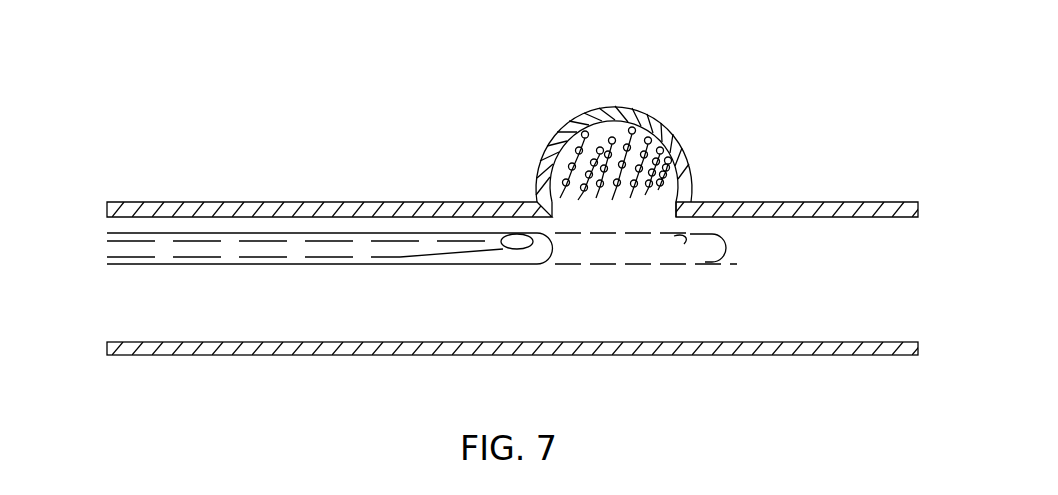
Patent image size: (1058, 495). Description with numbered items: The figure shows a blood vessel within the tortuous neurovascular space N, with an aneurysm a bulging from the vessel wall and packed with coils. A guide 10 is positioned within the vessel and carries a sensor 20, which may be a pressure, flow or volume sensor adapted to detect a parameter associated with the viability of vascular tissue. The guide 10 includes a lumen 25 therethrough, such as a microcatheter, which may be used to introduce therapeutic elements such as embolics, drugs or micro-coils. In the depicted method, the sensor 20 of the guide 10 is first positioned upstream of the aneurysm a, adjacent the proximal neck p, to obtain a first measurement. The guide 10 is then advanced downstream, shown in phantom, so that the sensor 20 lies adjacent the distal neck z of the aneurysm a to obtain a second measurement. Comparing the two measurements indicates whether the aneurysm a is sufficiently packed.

The guide 10 is at (188, 257).
The sensor 20 is at (512, 242).
The lumen 25 is at (127, 242).
The aneurysm a is at (625, 105).
The proximal neck p is at (537, 200).
The distal neck z is at (690, 201).
The neurovascular space N is at (807, 343).